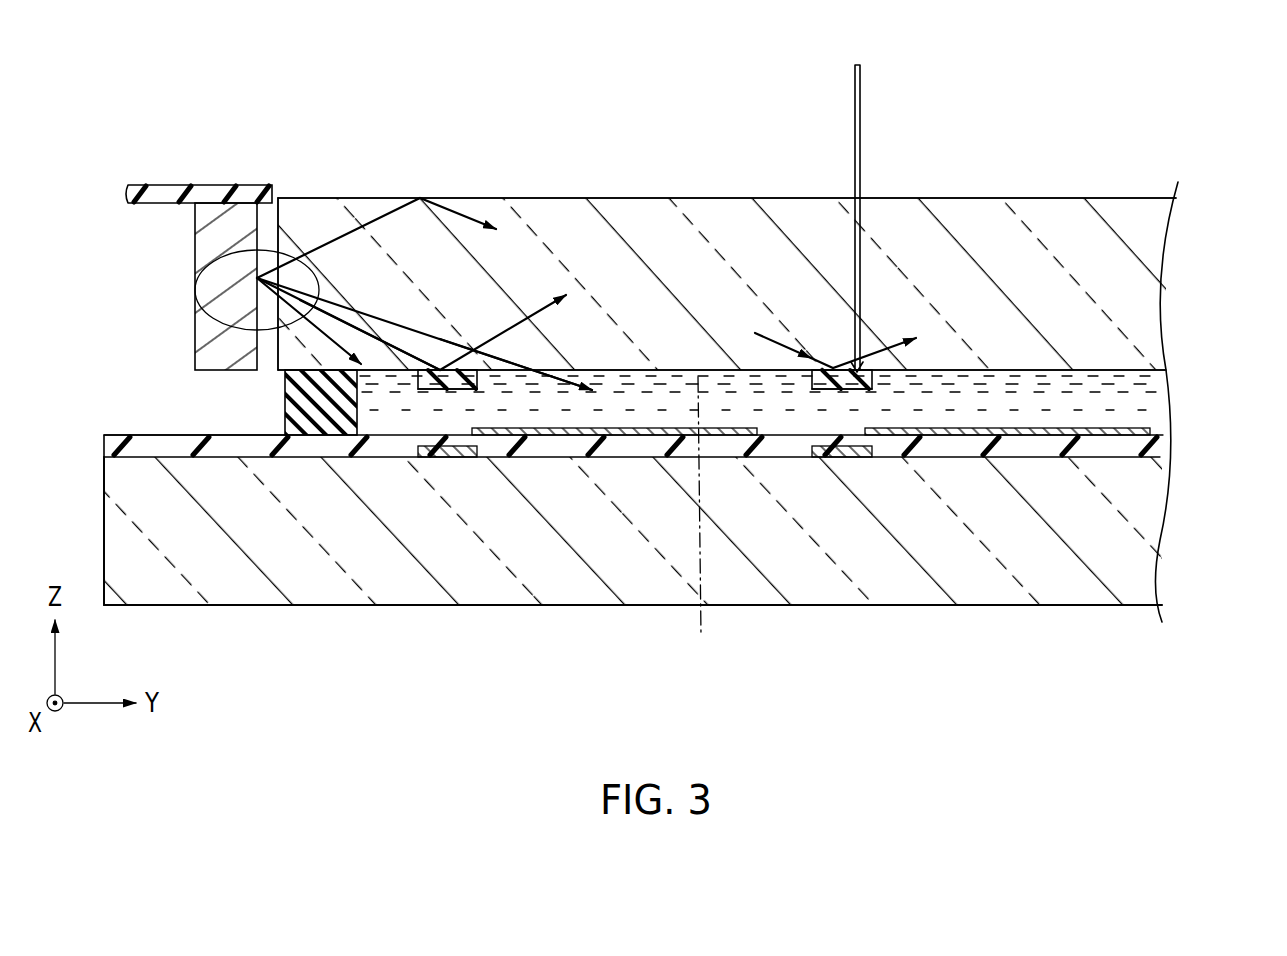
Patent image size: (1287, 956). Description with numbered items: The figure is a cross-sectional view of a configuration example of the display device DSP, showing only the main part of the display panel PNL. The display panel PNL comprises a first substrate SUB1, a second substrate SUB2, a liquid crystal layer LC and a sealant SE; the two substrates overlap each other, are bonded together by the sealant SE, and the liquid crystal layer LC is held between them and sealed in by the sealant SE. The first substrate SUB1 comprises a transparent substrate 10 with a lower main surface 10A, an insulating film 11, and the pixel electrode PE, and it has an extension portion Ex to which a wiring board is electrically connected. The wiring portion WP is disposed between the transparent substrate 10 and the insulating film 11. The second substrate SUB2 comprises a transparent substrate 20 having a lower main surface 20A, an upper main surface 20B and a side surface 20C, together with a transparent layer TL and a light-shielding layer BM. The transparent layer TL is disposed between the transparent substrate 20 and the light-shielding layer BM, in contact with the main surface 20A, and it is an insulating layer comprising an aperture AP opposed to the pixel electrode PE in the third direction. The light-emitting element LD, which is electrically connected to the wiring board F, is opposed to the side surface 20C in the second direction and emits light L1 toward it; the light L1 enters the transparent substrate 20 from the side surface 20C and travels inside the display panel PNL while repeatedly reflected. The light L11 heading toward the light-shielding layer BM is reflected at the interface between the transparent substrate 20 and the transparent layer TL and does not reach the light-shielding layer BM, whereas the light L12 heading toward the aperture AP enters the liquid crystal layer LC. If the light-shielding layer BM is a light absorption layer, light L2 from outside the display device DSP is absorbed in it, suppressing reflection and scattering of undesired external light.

The wiring board F is at (168, 192).
The light-emitting element LD is at (197, 238).
The light L1 is at (257, 278).
The light toward the light-shielding layer L11 is at (365, 325).
The light toward the aperture L12 is at (552, 376).
The light from the outside L2 is at (862, 93).
The transparent substrate 20 is at (903, 215).
The main surface (lower surface) 20A is at (1050, 376).
The main surface (upper surface) 20B is at (805, 196).
The side surface 20C is at (275, 345).
The second substrate SUB2 is at (1168, 296).
The first substrate SUB1 is at (1172, 548).
The display device DSP is at (1169, 143).
The sealant SE is at (284, 398).
The extension portion Ex is at (151, 431).
The transparent layer TL is at (447, 390).
The light-shielding layer BM is at (455, 382).
The transparent substrate 10 is at (322, 592).
The main surface (lower surface) 10A is at (519, 608).
The insulating film 11 is at (750, 443).
The wiring portion WP is at (450, 458).
The pixel electrode PE is at (585, 434).
The liquid crystal layer LC is at (640, 418).
The aperture AP is at (697, 521).
The display panel PNL is at (940, 608).